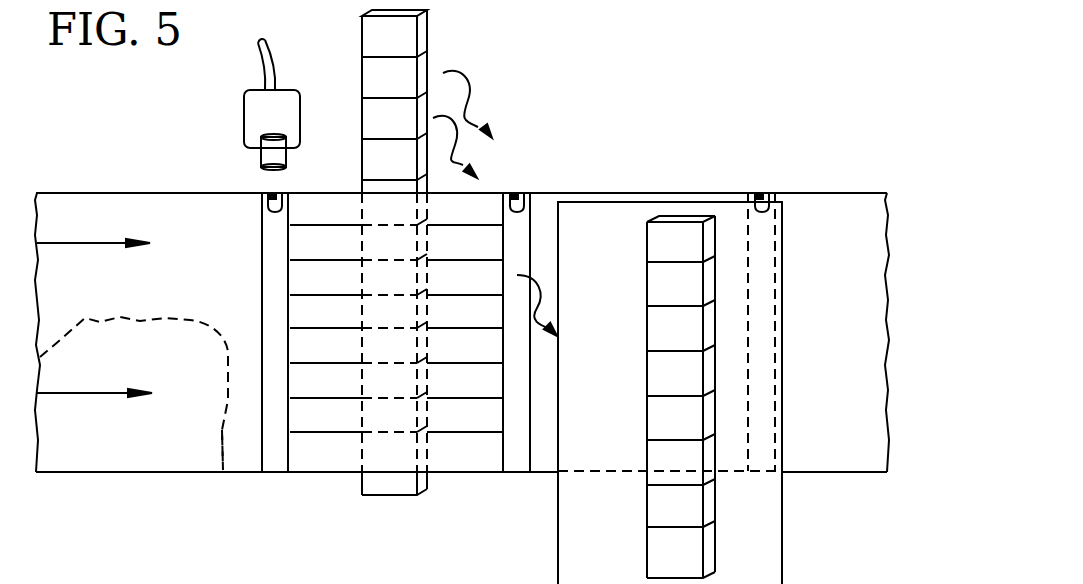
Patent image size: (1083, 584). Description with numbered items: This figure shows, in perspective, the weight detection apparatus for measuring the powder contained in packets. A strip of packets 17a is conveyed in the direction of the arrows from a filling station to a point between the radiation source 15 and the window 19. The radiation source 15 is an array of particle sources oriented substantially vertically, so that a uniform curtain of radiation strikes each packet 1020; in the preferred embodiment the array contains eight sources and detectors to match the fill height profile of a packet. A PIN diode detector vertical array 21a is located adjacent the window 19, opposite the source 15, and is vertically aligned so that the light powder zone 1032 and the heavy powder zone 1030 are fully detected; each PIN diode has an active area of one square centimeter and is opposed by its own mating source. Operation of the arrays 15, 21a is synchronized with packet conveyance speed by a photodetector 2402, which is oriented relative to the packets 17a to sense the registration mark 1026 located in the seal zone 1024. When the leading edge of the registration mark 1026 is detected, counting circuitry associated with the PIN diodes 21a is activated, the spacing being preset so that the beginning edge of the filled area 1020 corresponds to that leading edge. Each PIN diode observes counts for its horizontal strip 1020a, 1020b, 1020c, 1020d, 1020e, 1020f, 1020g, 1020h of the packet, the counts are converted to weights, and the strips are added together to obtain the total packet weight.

The strip of packets 17a is at (138, 168).
The photodetector 2402 is at (272, 104).
The radiation source 15 is at (428, 14).
The registration mark 1026 is at (514, 192).
The packet 1020 is at (135, 305).
The horizontal strip 1020a is at (396, 214).
The horizontal strip 1020b is at (396, 249).
The horizontal strip 1020c is at (396, 284).
The horizontal strip 1020d is at (396, 317).
The horizontal strip 1020e is at (396, 352).
The horizontal strip 1020f is at (396, 387).
The horizontal strip 1020g is at (396, 421).
The horizontal strip 1020h is at (396, 452).
The light powder zone 1032 is at (138, 369).
The heavy powder zone 1030 is at (138, 441).
The seal zone 1024 is at (243, 465).
The window 19 is at (540, 236).
The PIN diode detector vertical array 21a is at (658, 329).